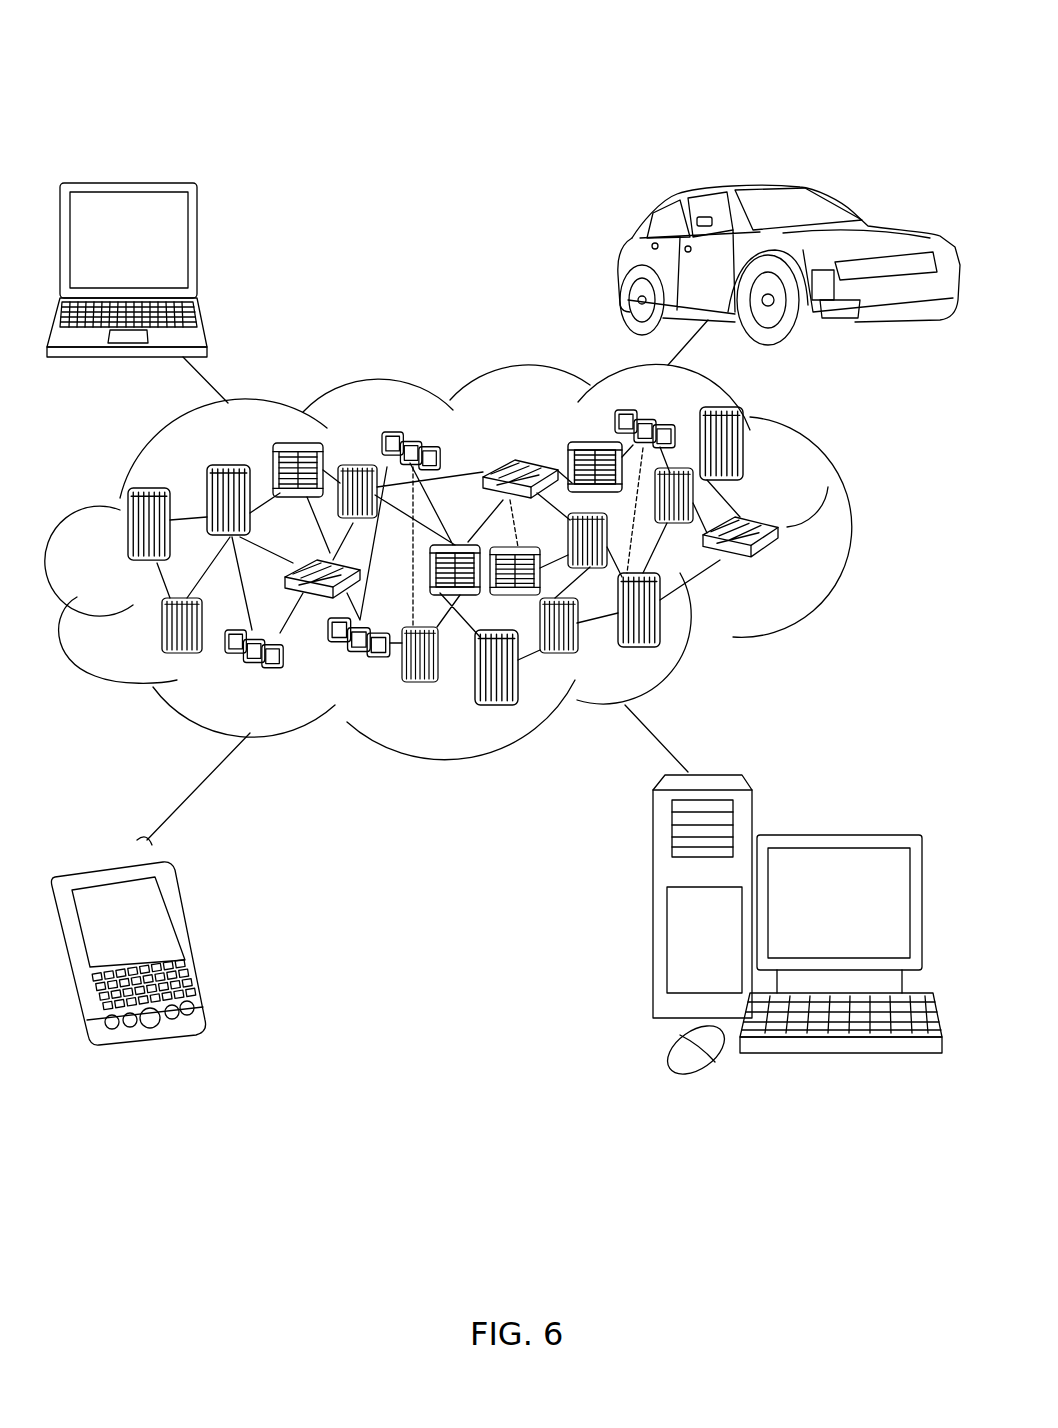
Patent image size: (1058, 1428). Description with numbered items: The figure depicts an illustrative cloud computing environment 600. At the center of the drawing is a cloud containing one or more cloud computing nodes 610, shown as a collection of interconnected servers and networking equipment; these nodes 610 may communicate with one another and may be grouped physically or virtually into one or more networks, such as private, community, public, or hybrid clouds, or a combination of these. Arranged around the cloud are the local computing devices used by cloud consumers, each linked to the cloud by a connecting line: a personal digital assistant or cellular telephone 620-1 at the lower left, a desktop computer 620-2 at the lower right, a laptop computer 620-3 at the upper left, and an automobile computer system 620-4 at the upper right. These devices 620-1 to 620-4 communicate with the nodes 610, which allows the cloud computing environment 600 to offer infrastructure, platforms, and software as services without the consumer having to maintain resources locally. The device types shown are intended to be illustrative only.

The cloud computing environment 600 is at (783, 38).
The cloud computing nodes 610 is at (469, 580).
The personal digital assistant or cellular telephone 620-1 is at (191, 933).
The desktop computer 620-2 is at (837, 835).
The laptop computer 620-3 is at (197, 248).
The automobile computer system 620-4 is at (620, 267).